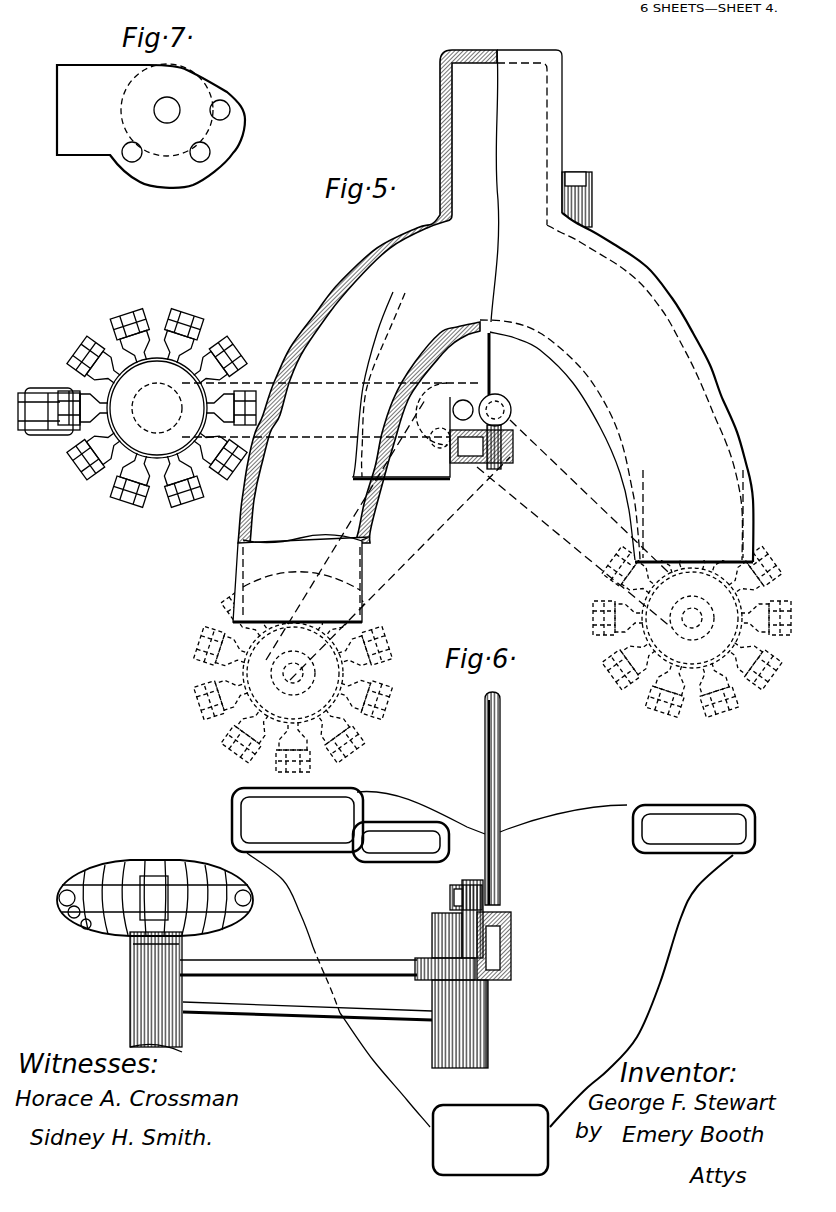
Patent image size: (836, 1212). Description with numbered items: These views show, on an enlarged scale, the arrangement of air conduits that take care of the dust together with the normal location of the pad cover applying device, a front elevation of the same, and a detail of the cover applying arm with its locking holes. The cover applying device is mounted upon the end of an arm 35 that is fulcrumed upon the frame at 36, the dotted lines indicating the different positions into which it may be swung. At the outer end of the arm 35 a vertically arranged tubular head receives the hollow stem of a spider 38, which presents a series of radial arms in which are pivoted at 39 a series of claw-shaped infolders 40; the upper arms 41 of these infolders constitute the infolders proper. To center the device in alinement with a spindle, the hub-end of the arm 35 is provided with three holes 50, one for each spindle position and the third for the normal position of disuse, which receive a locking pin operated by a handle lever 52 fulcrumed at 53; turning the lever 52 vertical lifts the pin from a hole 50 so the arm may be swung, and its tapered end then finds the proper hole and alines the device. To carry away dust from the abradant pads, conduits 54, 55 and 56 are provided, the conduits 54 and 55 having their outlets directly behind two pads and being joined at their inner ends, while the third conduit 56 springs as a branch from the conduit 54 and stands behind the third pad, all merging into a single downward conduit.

In FIG. 7, the arm 35 is at (84, 82).
In FIG. 5, the arm 35 is at (262, 393).
In FIG. 6, the arm 35 is at (277, 996).
In FIG. 5, the fulcrum 36 is at (488, 404).
In FIG. 6, the fulcrum 36 is at (489, 1045).
In FIG. 6, the spider 38 is at (103, 930).
In FIG. 6, the pivot 39 is at (73, 913).
In FIG. 6, the infolder 40 is at (165, 866).
In FIG. 6, the upper arm of infolder 41 is at (84, 926).
In FIG. 7, the holes 50 is at (232, 112).
In FIG. 6, the handle lever 52 is at (501, 813).
In FIG. 6, the fulcrum of handle lever 53 is at (452, 895).
In FIG. 5, the conduit 54 is at (412, 336).
In FIG. 6, the conduit 54 is at (336, 792).
In FIG. 5, the conduit 55 is at (616, 387).
In FIG. 6, the conduit 55 is at (707, 808).
In FIG. 5, the conduit 56 is at (421, 462).
In FIG. 6, the conduit 56 is at (403, 818).